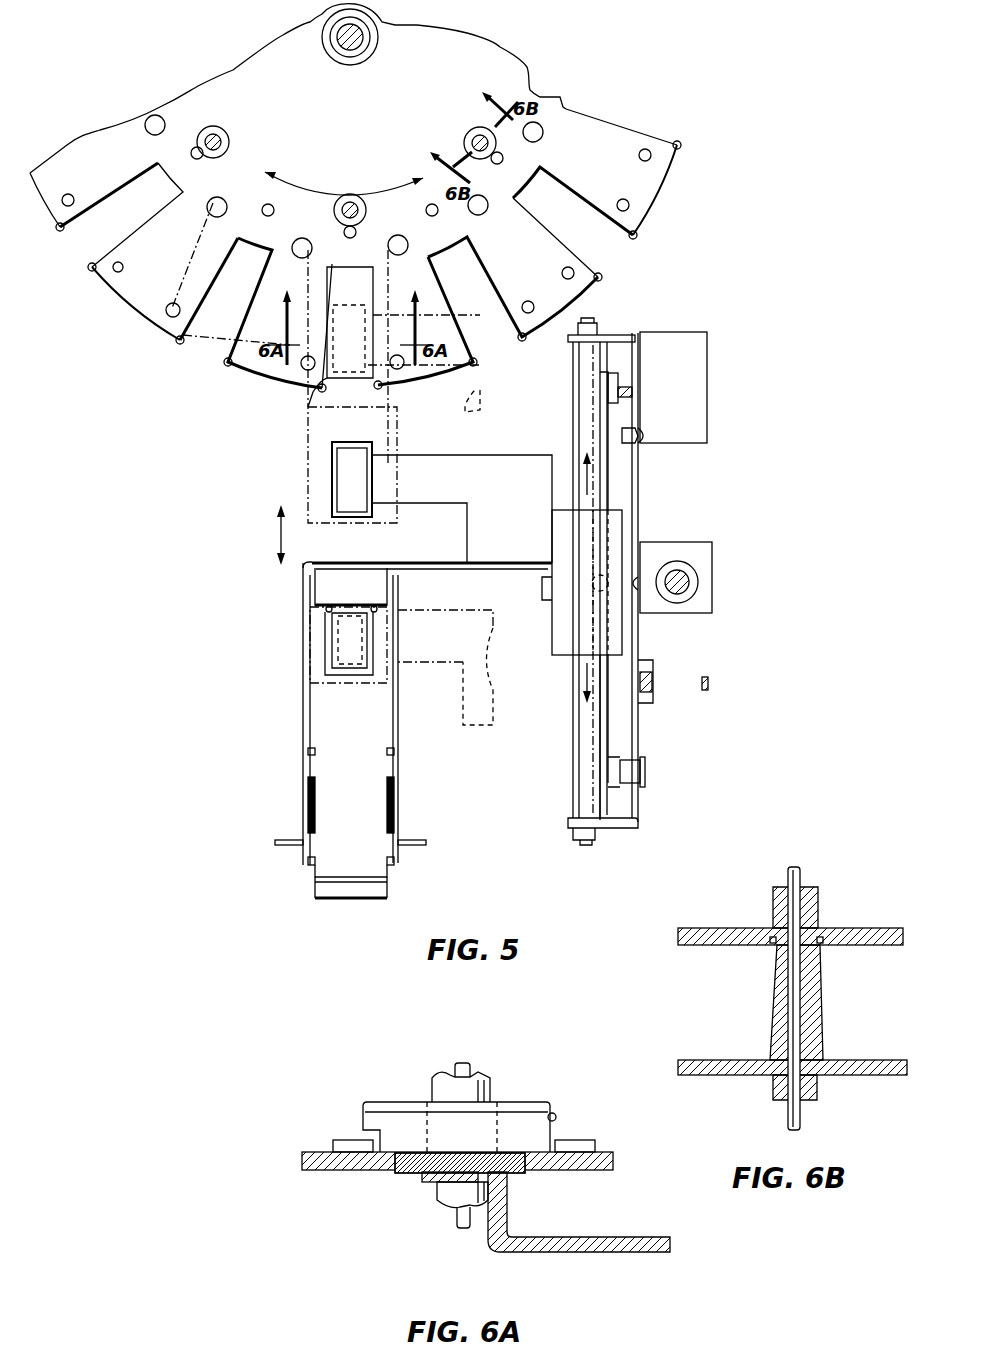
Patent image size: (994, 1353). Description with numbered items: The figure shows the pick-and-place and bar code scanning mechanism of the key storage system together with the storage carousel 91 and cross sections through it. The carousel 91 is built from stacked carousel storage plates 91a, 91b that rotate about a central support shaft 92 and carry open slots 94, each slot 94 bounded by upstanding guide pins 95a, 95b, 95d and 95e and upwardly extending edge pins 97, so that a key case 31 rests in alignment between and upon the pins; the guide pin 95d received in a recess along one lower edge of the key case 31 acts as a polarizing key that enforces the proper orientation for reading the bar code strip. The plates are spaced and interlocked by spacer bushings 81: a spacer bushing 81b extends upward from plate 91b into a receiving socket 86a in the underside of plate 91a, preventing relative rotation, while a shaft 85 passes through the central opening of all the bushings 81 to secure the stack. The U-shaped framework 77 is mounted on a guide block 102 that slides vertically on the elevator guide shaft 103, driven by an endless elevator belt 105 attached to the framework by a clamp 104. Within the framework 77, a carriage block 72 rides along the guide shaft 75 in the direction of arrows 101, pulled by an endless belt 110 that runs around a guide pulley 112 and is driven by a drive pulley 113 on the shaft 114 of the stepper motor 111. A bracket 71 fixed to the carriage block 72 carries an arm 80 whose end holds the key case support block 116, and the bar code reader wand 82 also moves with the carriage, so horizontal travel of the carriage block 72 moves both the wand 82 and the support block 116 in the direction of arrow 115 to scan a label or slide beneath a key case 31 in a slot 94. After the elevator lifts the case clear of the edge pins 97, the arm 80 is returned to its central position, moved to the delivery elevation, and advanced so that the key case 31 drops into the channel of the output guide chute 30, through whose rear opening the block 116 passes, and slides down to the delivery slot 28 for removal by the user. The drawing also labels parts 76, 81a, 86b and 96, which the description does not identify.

In FIG. 5, the delivery slot 28 is at (372, 868).
In FIG. 5, the key case output guide chute 30 is at (310, 766).
In FIG. 5, the key case 31 is at (205, 225).
In FIG. 6A, the key case 31 is at (530, 1102).
In FIG. 5, the bracket 71 is at (488, 570).
In FIG. 5, the carriage block 72 is at (524, 532).
In FIG. 5, the guide shaft 75 is at (576, 770).
In FIG. 5, the frame bracket 76 is at (620, 335).
In FIG. 5, the U-shaped framework 77 is at (638, 640).
In FIG. 5, the arm 80 is at (382, 475).
In FIG. 6A, the arm 80 is at (508, 1250).
In FIG. 5, the spacer bushings 81 is at (229, 142).
In FIG. 6A, the upper bushing 81a is at (433, 1088).
In FIG. 6B, the upper bushing 81a is at (815, 890).
In FIG. 6A, the spacer bushing 81b is at (440, 1192).
In FIG. 6B, the spacer bushing 81b is at (822, 1028).
In FIG. 5, the bar code reader wand 82 is at (318, 588).
In FIG. 5, the shaft 85 is at (216, 138).
In FIG. 6A, the shaft 85 is at (468, 1066).
In FIG. 6B, the shaft 85 is at (788, 877).
In FIG. 6B, the receiving socket 86a is at (774, 946).
In FIG. 6B, the lower lip 86b is at (775, 1078).
In FIG. 5, the storage carousel 91 is at (364, 137).
In FIG. 6A, the storage carousel 91 is at (300, 1162).
In FIG. 6B, the carousel storage plate 91a is at (868, 928).
In FIG. 6B, the carousel storage plate 91b is at (878, 1060).
In FIG. 5, the central support shaft 92 is at (372, 45).
In FIG. 5, the slot 94 is at (112, 220).
In FIG. 6A, the slot 94 is at (405, 1162).
In FIG. 5, the guide pin 95a is at (123, 267).
In FIG. 5, the guide pin 95b is at (153, 115).
In FIG. 6A, the guide pin 95b is at (345, 1138).
In FIG. 5, the guide pin 95d is at (72, 197).
In FIG. 5, the guide pin 95e is at (192, 155).
In FIG. 5, the segment edge 96 is at (100, 145).
In FIG. 5, the edge pins 97 is at (88, 268).
In FIG. 5, the arrows 101 is at (570, 477).
In FIG. 5, the guide block 102 is at (712, 558).
In FIG. 5, the elevator guide shaft 103 is at (692, 582).
In FIG. 5, the clamp 104 is at (653, 680).
In FIG. 5, the endless elevator belt 105 is at (708, 684).
In FIG. 5, the endless belt 110 is at (610, 482).
In FIG. 5, the stepper motor 111 is at (707, 392).
In FIG. 5, the guide pulley 112 is at (620, 770).
In FIG. 5, the drive pulley 113 is at (620, 378).
In FIG. 5, the shaft 114 is at (632, 393).
In FIG. 5, the arrow 115 is at (279, 535).
In FIG. 5, the key case support block 116 is at (366, 285).
In FIG. 6A, the key case support block 116 is at (505, 1170).